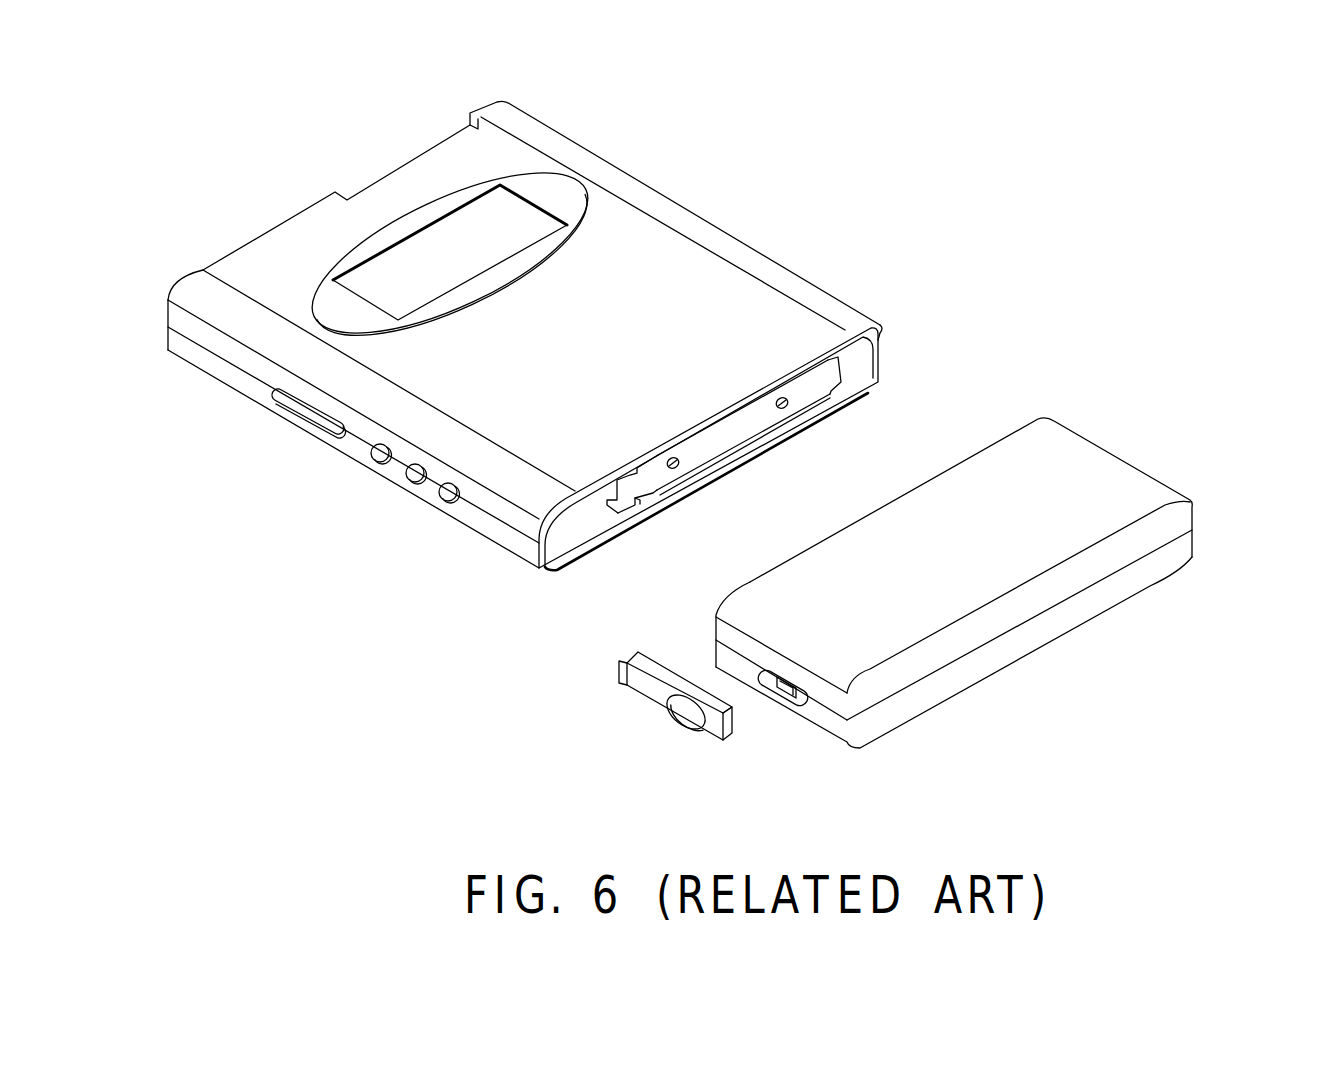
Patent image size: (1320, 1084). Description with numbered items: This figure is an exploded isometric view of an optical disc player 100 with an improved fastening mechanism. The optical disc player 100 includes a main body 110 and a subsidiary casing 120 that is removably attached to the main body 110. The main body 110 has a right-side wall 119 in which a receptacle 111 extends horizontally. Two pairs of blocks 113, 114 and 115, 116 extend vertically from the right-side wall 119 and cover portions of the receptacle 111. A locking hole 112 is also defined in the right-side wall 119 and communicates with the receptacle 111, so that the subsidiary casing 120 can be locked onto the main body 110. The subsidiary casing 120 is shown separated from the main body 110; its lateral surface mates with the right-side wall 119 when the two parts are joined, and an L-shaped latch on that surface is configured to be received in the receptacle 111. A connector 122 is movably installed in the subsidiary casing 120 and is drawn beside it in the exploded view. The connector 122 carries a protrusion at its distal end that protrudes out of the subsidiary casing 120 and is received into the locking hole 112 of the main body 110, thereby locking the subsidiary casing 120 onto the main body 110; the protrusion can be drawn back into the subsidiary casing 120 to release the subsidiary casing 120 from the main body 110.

The optical disc player 100 is at (798, 121).
The main body 110 is at (818, 262).
The receptacle 111 is at (753, 420).
The locking hole 112 is at (608, 503).
The block 113 is at (648, 498).
The block 114 is at (648, 463).
The block 115 is at (866, 336).
The block 116 is at (840, 395).
The right-side wall 119 is at (555, 545).
The subsidiary casing 120 is at (1152, 450).
The connector 122 is at (715, 737).